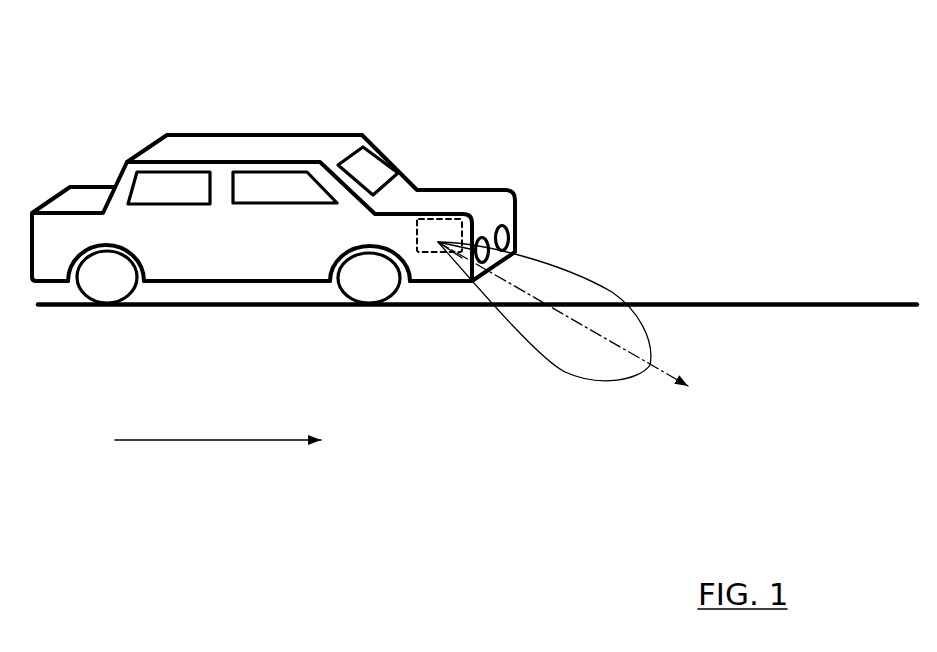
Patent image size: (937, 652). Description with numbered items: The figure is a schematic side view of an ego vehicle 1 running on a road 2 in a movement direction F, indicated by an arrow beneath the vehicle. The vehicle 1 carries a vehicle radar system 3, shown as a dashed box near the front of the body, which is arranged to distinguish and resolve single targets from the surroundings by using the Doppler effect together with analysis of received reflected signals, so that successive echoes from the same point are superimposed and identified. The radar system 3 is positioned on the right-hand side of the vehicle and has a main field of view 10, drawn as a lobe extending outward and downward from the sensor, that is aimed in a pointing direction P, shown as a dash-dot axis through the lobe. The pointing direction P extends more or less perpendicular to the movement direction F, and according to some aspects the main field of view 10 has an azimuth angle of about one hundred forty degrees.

The ego vehicle 1 is at (336, 71).
The road 2 is at (770, 305).
The vehicle radar system 3 is at (447, 212).
The main field of view 10 is at (624, 327).
The pointing direction P is at (587, 319).
The movement direction F is at (218, 422).